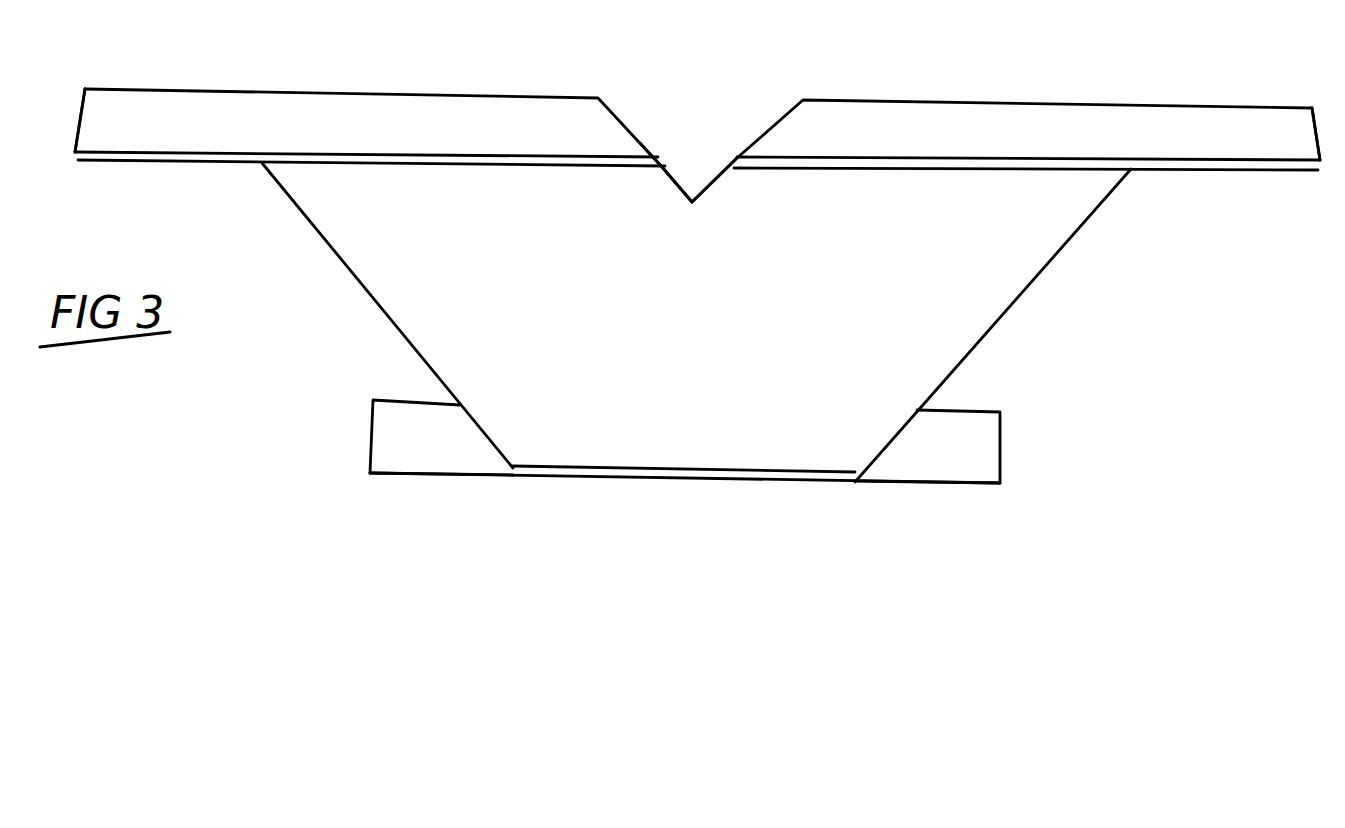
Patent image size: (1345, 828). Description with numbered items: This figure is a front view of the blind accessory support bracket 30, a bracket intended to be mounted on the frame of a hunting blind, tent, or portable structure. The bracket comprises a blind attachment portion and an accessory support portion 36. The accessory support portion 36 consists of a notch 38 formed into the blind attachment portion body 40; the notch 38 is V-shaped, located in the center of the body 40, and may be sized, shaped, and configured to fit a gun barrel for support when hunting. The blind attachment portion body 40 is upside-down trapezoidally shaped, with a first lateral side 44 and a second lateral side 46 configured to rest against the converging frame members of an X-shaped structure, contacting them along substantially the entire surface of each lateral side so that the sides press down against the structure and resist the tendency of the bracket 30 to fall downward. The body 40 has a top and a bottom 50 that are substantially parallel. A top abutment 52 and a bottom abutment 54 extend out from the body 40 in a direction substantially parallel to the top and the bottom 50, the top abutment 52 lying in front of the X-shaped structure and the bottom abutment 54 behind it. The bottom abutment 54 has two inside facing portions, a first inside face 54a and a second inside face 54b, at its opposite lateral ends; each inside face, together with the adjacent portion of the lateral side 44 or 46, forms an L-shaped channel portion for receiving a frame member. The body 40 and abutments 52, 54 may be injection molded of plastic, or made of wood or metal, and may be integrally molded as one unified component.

The blind accessory support bracket 30 is at (925, 87).
The accessory support portion 36 is at (722, 172).
The notch 38 is at (662, 167).
The blind attachment portion body 40 is at (987, 195).
The first lateral side 44 is at (1037, 283).
The second lateral side 46 is at (350, 277).
The bottom 50 is at (700, 487).
The top abutment 52 is at (115, 103).
The bottom abutment 54 is at (423, 460).
The first inside face 54a is at (373, 427).
The second inside face 54b is at (995, 443).